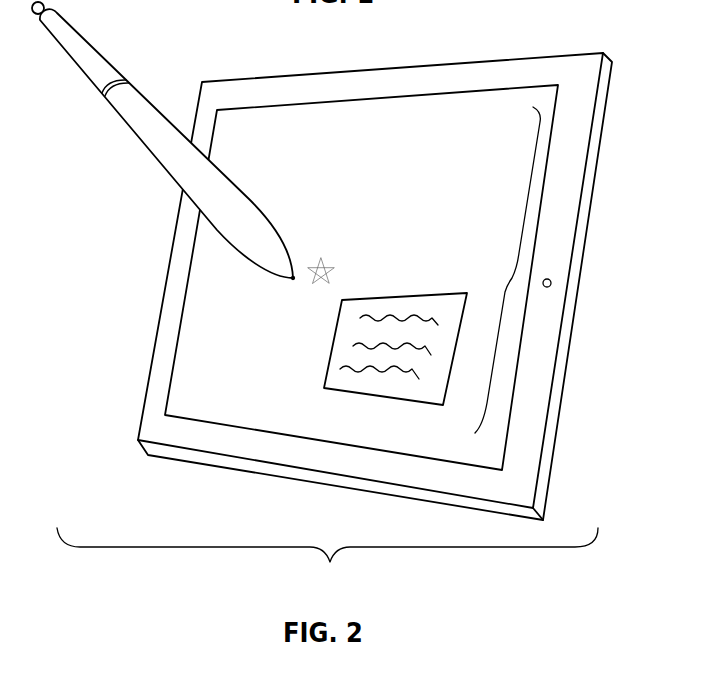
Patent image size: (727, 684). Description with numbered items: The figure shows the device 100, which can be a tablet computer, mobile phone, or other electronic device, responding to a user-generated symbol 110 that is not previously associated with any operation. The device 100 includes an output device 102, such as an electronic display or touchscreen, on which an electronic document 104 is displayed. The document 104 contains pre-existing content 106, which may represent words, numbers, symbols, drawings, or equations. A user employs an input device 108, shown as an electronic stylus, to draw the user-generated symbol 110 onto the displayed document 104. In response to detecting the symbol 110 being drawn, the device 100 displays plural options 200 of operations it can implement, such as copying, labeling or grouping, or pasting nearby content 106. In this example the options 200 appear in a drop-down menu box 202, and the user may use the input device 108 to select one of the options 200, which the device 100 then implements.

The device 100 is at (327, 561).
The output device 102 is at (477, 88).
The electronic document 104 is at (518, 272).
The pre-existing content 106 is at (363, 130).
The input device 108 is at (92, 45).
The user-generated symbol 110 is at (315, 262).
The options 200 is at (398, 370).
The drop-down menu box 202 is at (351, 393).